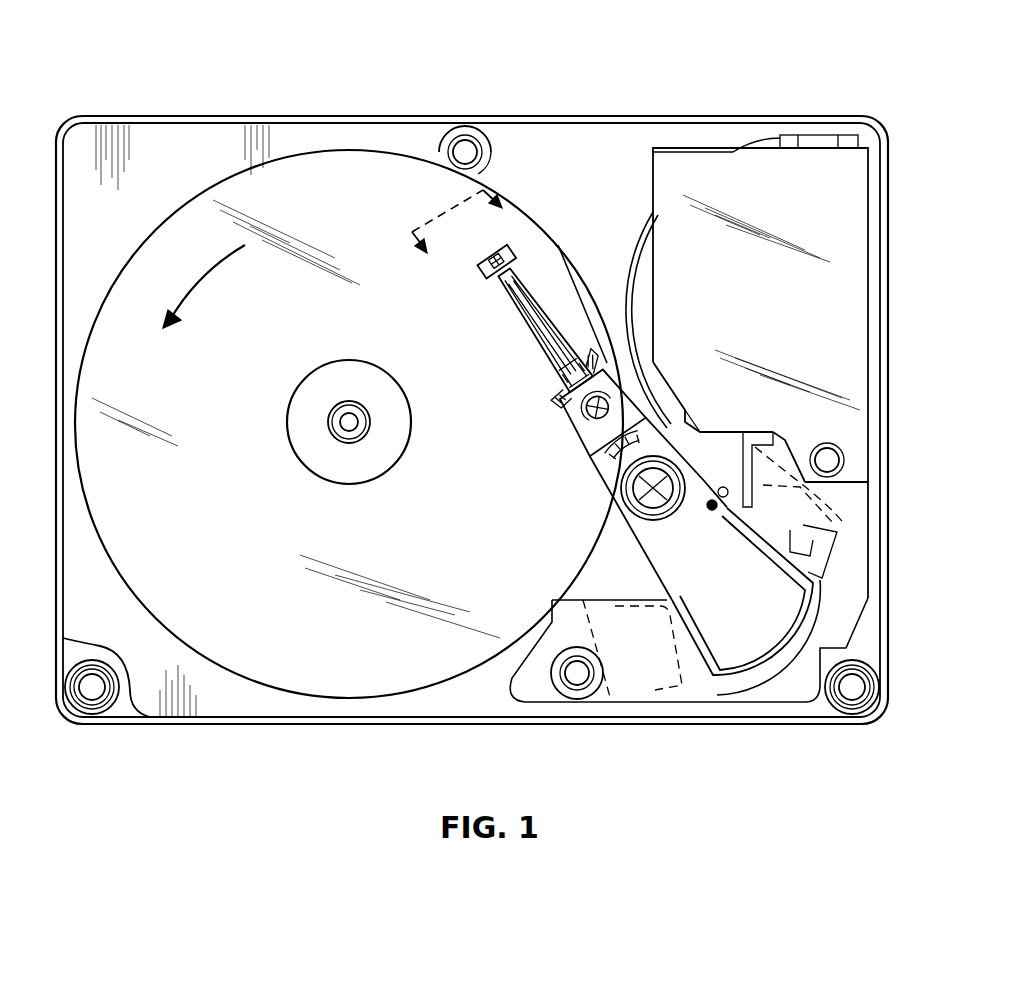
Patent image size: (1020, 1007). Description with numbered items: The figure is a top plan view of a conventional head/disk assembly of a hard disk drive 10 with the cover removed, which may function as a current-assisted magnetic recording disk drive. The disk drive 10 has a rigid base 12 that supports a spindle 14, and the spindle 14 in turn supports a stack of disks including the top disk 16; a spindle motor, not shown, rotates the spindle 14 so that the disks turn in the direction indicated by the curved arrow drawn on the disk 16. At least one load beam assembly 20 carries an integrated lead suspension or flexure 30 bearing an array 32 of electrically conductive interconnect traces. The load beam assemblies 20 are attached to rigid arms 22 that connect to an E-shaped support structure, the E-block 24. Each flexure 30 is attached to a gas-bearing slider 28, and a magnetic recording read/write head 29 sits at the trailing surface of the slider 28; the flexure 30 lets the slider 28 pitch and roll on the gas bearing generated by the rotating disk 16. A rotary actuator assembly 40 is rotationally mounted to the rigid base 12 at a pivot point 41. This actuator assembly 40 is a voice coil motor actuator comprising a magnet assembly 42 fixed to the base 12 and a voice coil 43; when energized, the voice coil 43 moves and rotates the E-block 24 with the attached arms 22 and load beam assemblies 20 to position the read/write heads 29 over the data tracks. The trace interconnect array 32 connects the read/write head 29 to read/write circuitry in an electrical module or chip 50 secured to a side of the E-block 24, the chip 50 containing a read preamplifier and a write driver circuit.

The disk drive 10 is at (135, 50).
The rigid base 12 is at (223, 725).
The spindle 14 is at (349, 360).
The top disk 16 is at (342, 700).
The load beam assembly 20 is at (547, 397).
The rigid arm 22 is at (574, 415).
The E-block 24 is at (602, 475).
The gas-bearing slider 28 is at (520, 258).
The read/write head 29 is at (484, 256).
The flexure 30 is at (513, 277).
The array of interconnect traces 32 is at (538, 308).
The rotary actuator assembly 40 is at (602, 556).
The pivot point 41 is at (623, 500).
The magnet assembly 42 is at (763, 492).
The voice coil 43 is at (820, 582).
The electrical module or chip 50 is at (700, 433).